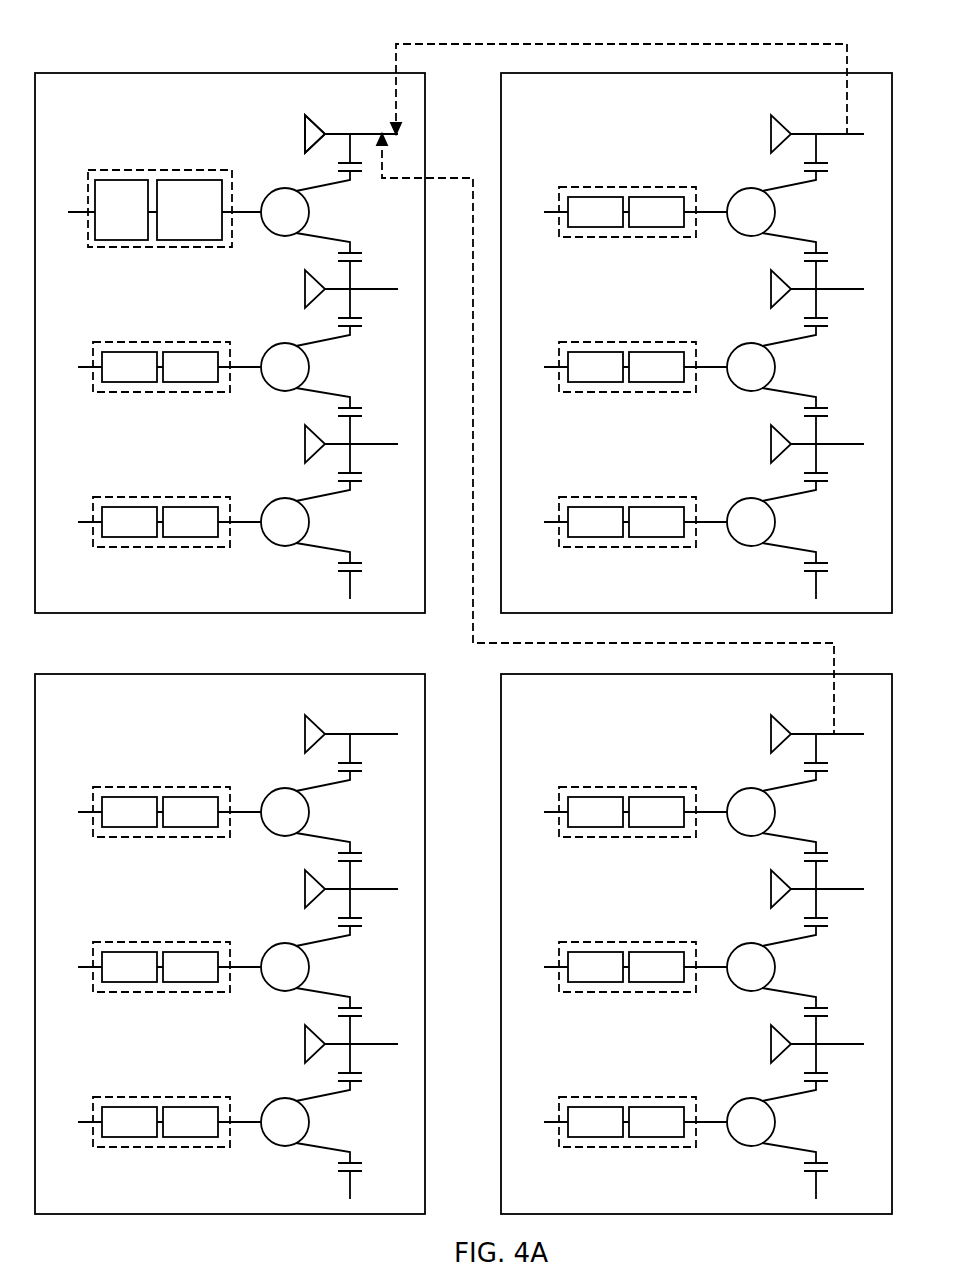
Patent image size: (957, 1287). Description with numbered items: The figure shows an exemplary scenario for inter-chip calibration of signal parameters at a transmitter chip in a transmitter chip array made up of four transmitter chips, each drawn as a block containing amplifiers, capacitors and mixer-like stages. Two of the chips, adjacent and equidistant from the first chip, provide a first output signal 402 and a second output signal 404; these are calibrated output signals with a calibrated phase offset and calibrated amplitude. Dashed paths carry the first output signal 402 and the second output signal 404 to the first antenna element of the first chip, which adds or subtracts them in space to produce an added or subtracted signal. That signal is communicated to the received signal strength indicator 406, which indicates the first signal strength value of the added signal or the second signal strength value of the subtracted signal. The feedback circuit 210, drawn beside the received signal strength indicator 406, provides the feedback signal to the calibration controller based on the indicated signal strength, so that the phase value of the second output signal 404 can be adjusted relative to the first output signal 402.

The feedback circuit 210 is at (143, 222).
The received signal strength indicator (RSSI) 406 is at (208, 237).
The first output signal 402 is at (545, 44).
The second output signal 404 is at (473, 612).